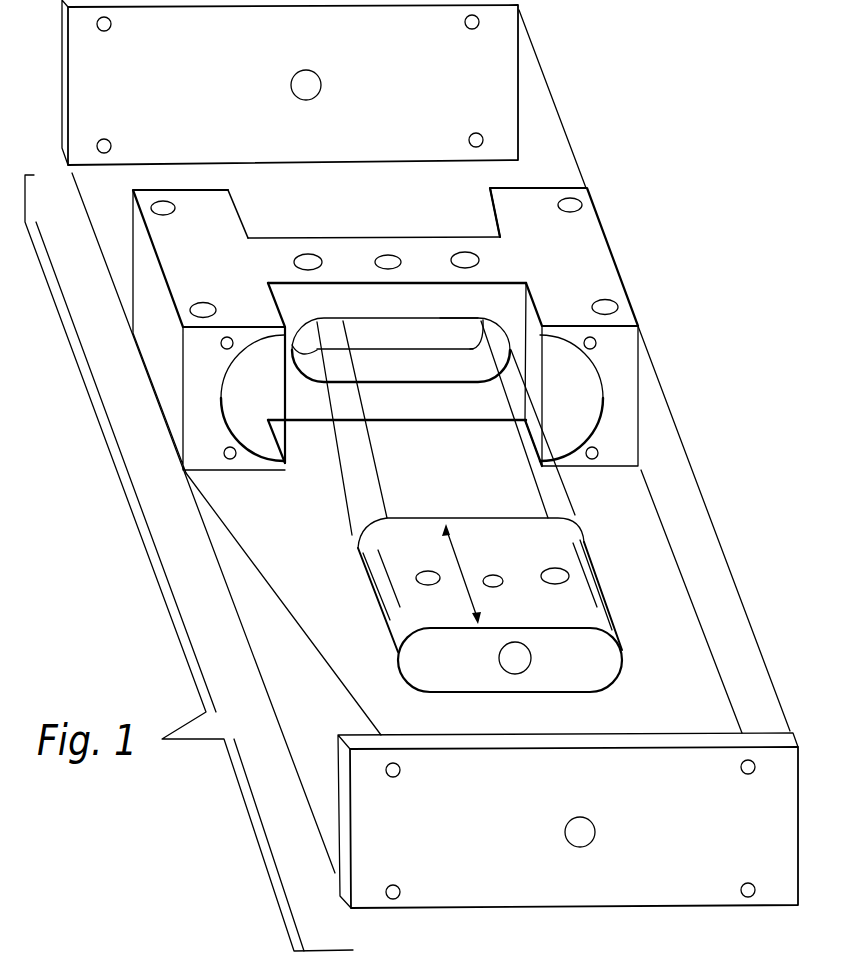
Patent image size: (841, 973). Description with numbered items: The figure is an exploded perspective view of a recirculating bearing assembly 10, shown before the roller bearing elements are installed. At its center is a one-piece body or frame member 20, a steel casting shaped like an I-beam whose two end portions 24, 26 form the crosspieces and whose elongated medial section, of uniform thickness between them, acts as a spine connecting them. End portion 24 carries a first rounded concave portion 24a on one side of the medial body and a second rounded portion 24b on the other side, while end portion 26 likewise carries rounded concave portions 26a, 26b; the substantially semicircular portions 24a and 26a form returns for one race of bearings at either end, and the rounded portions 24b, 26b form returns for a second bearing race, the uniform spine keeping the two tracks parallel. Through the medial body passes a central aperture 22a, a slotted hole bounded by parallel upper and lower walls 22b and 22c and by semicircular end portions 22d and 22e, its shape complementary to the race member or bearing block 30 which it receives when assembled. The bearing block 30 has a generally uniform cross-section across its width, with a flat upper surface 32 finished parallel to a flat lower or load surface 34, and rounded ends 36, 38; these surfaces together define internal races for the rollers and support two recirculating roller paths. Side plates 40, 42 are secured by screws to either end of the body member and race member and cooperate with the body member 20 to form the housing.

The recirculating bearing assembly 10 is at (626, 123).
The body or frame member 20 is at (615, 259).
The central aperture 22a is at (402, 330).
The upper wall 22b is at (452, 325).
The lower wall 22c is at (388, 372).
The semicircular end portion 22d is at (313, 355).
The semicircular end portion 22e is at (497, 333).
The end portion 24 is at (215, 269).
The first rounded concave portion 24a is at (270, 447).
The second rounded portion 24b is at (250, 236).
The end portion 26 is at (575, 269).
The rounded concave portion 26a is at (580, 430).
The rounded concave portion 26b is at (500, 236).
The race member or bearing block 30 is at (612, 594).
The upper surface 32 is at (517, 554).
The lower or load surface 34 is at (499, 697).
The rounded end 36 is at (622, 660).
The rounded end 38 is at (398, 668).
The side plate 40 is at (204, 100).
The side plate 42 is at (506, 840).